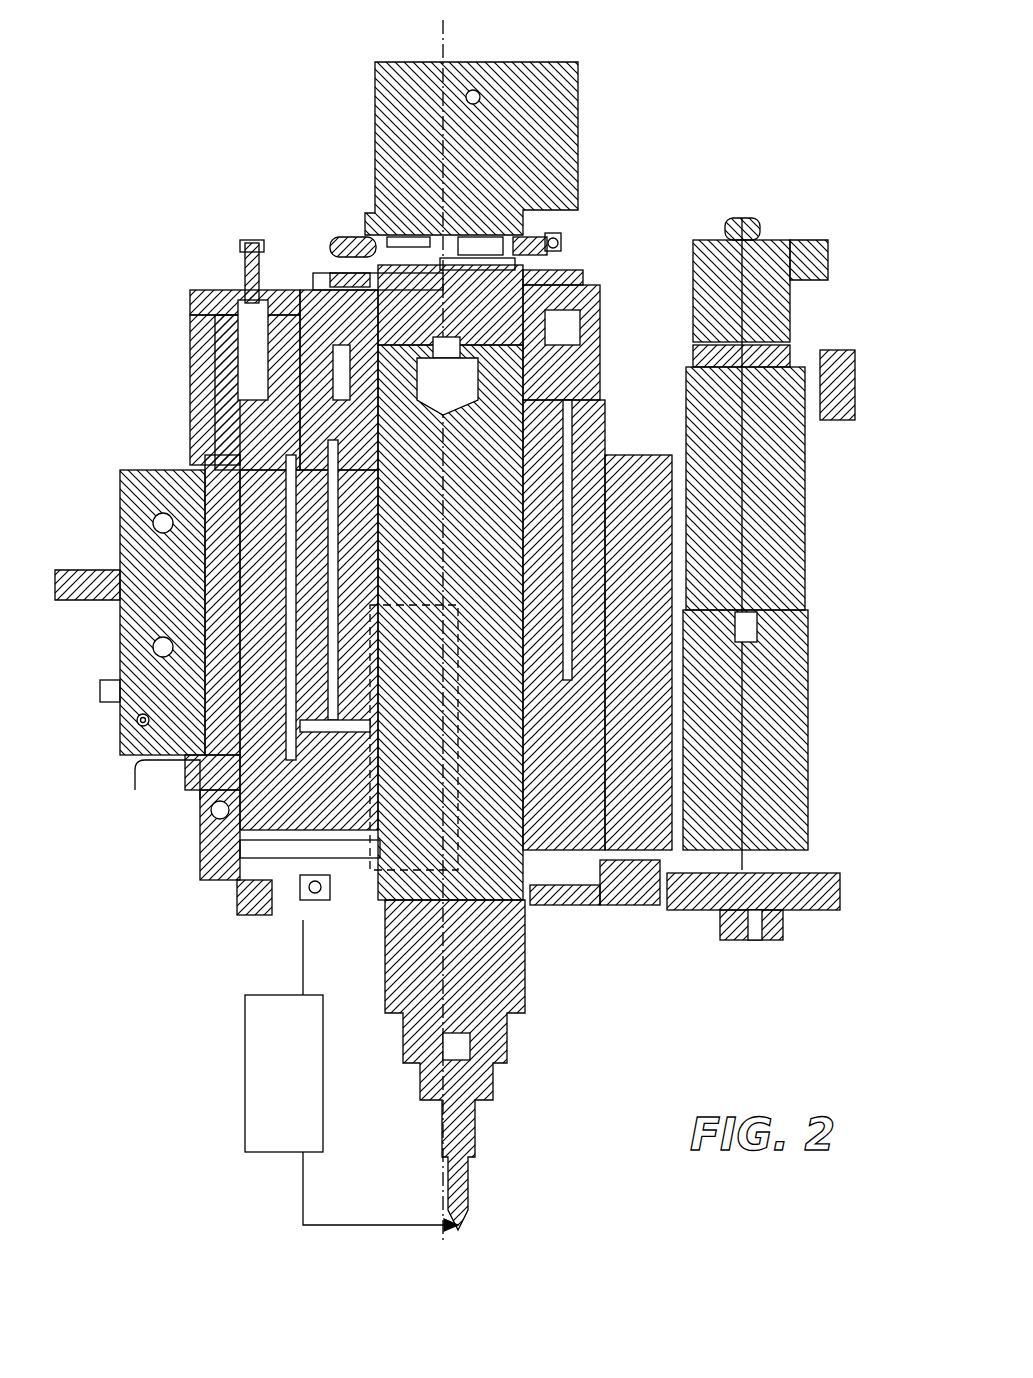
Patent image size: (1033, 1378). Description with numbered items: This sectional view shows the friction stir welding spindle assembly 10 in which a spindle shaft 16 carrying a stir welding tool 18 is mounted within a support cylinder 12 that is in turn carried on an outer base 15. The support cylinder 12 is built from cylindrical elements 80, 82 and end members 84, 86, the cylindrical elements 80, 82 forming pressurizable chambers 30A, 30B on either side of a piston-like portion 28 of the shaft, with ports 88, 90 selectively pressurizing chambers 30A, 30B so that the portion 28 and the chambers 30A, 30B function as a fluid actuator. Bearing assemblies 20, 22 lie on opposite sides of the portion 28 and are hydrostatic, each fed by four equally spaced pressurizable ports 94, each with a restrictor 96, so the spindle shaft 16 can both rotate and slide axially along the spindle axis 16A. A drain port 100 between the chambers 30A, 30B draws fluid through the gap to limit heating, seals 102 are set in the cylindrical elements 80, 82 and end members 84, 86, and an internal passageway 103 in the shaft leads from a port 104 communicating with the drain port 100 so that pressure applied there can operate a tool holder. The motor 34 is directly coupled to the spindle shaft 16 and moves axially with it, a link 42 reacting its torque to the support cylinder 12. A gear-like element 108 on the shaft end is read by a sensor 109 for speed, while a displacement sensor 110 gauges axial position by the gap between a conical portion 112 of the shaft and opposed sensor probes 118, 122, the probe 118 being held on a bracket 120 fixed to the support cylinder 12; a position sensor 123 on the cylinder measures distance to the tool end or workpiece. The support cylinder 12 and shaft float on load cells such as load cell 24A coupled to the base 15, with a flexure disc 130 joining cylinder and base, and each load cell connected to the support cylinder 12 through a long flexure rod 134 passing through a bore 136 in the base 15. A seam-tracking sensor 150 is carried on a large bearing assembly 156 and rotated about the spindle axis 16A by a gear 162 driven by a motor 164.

The spindle assembly 10 is at (200, 195).
The support cylinder 12 is at (628, 440).
The outer base 15 is at (215, 455).
The spindle shaft 16 is at (395, 990).
The spindle axis 16A is at (443, 36).
The stir welding tool 18 is at (470, 1182).
The bearing assembly 20 is at (210, 830).
The bearing assembly 22 is at (365, 450).
The load cell 24A is at (222, 270).
The portion 28 is at (160, 508).
The pressurizable chamber 30A is at (690, 480).
The pressurizable chamber 30B is at (700, 675).
The motor 34 is at (578, 90).
The link 42 is at (338, 237).
The cylindrical element 80 is at (700, 735).
The cylindrical element 82 is at (690, 535).
The end member 84 is at (600, 905).
The end member 86 is at (538, 395).
The port 88 is at (700, 500).
The port 90 is at (740, 628).
The pressurizable port 94 is at (310, 405).
The restrictor 96 is at (200, 470).
The drain port 100 is at (190, 553).
The seal 102 is at (395, 380).
The internal passageway 103 is at (380, 925).
The port 104 is at (360, 668).
The gear-like element 108 is at (345, 300).
The sensor 109 is at (600, 300).
The displacement sensor 110 is at (340, 935).
The conical portion 112 is at (540, 905).
The sensor probe 118 is at (335, 948).
The bracket 120 is at (282, 900).
The sensor probe 122 is at (565, 905).
The position sensor 123 is at (245, 1108).
The flexure disc 130 is at (640, 905).
The flexure rod 134 is at (175, 475).
The bore 136 is at (240, 622).
The seam-tracking sensor 150 is at (820, 550).
The bearing assembly 156 is at (250, 882).
The gear 162 is at (812, 897).
The motor 164 is at (808, 693).